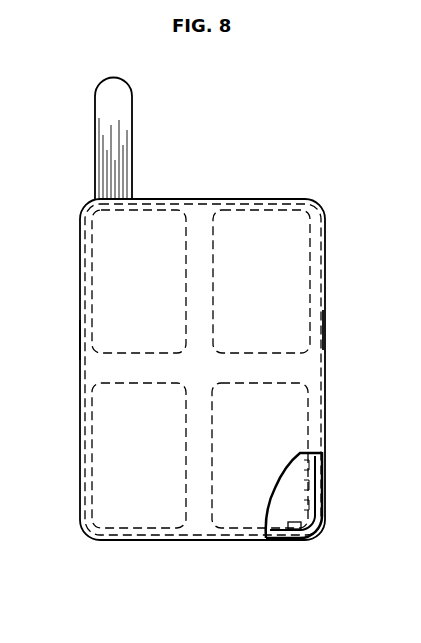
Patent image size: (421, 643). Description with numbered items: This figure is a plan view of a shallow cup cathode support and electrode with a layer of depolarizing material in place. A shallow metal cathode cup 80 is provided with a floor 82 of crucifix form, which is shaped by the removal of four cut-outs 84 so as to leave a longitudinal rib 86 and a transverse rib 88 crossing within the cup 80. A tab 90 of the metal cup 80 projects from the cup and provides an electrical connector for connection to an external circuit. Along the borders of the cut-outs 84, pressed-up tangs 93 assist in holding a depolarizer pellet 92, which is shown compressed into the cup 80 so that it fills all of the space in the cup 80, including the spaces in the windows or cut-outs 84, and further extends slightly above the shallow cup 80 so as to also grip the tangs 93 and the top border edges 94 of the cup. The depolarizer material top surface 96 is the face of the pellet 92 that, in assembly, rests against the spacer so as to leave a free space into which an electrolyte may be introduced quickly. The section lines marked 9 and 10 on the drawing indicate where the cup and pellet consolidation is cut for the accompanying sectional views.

The shallow metal cathode cup 80 is at (235, 188).
The floor 82 is at (183, 300).
The cut-outs 84 is at (84, 453).
The longitudinal rib 86 is at (204, 276).
The transverse rib 88 is at (150, 384).
The tab 90 is at (116, 123).
The depolarizer pellet 92 is at (155, 492).
The pressed-up tangs 93 is at (294, 531).
The top border edges 94 is at (322, 490).
The depolarizer material top surface 96 is at (232, 514).
The section line 9- 9 is at (62, 275).
The section line 10- 10 is at (115, 66).